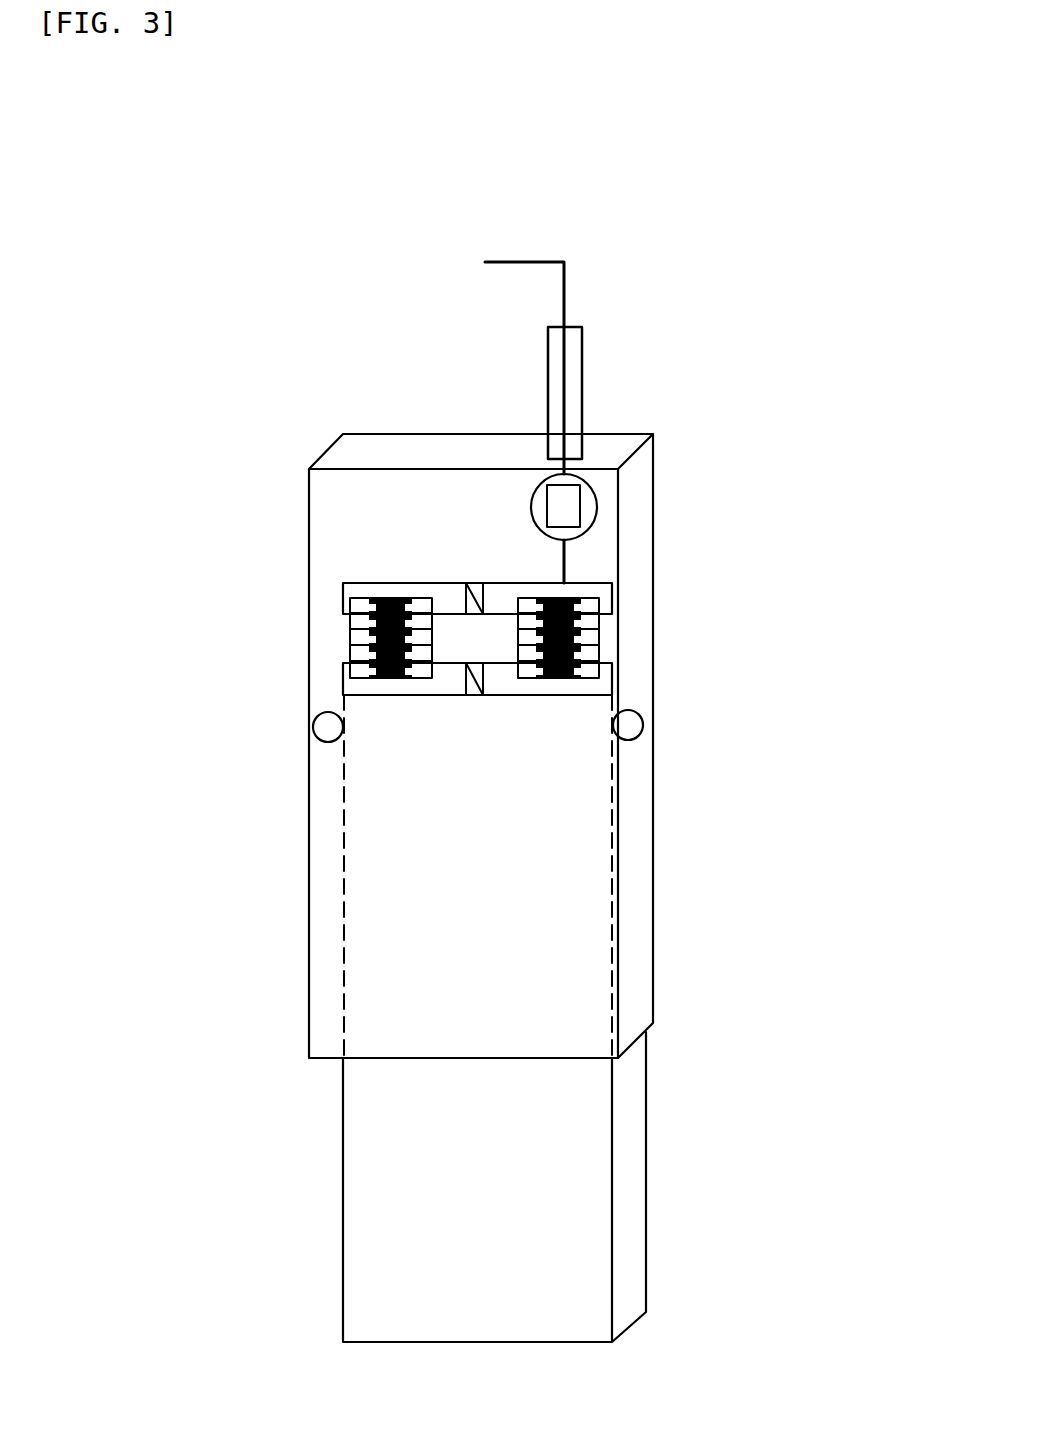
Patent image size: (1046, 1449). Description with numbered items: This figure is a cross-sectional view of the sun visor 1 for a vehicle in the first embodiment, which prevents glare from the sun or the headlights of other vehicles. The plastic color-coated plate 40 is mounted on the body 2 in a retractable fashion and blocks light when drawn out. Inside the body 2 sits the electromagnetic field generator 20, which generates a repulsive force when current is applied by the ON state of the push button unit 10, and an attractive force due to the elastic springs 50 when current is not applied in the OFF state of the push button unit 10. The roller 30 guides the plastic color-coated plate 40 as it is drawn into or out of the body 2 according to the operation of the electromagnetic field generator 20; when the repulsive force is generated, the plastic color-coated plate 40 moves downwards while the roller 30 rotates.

The sun visor 1 is at (653, 867).
The body 2 is at (415, 948).
The push button unit 10 is at (573, 497).
The electromagnetic field generator 20 is at (655, 590).
The roller 30 is at (327, 728).
The plastic color-coated plate 40 is at (590, 1183).
The elastic springs 50 is at (360, 610).